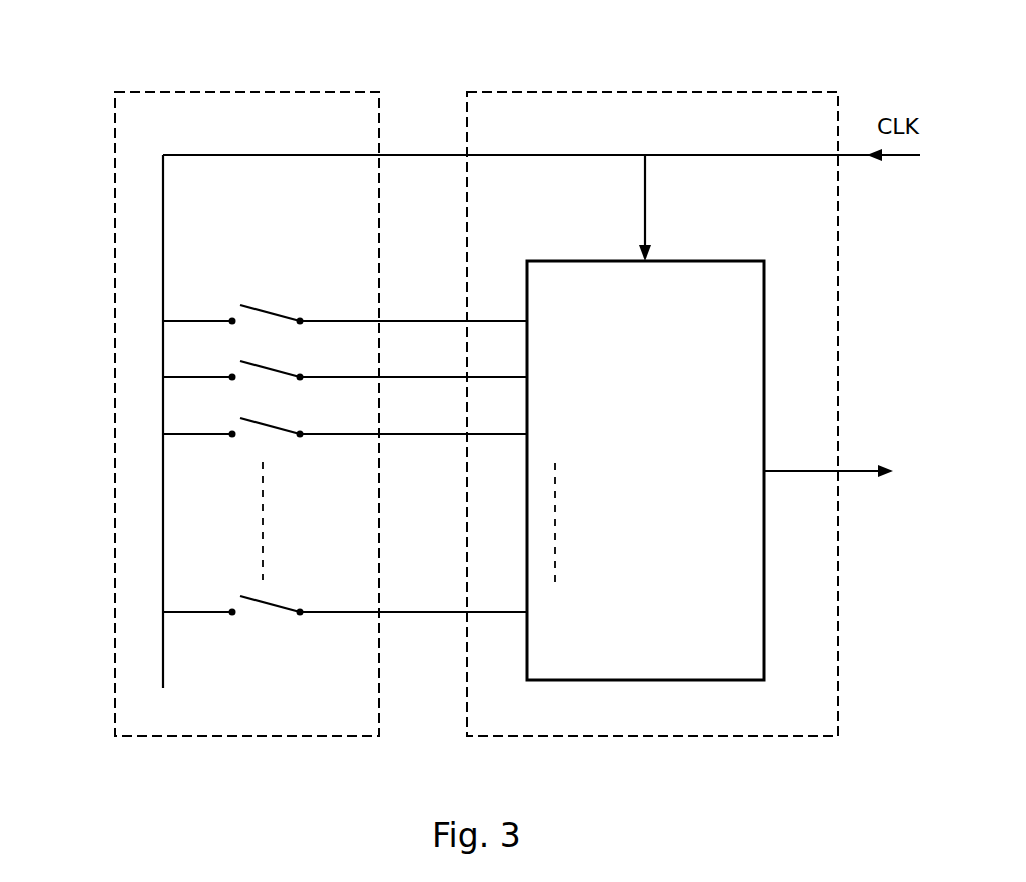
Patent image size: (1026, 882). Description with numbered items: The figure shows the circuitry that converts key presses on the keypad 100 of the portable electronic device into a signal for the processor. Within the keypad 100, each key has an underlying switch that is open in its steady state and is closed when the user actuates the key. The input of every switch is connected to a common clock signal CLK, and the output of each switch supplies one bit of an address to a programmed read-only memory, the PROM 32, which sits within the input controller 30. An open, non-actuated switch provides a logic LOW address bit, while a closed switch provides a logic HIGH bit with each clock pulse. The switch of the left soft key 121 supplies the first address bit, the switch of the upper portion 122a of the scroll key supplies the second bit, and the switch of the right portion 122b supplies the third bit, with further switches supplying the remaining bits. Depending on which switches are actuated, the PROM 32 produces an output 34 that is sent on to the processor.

The keypad 100 is at (223, 92).
The input controller 30 is at (728, 92).
The programmed read-only memory (PROM) 32 is at (718, 261).
The output 34 is at (822, 471).
The left soft key 121 is at (198, 305).
The upper portion of the scroll key 122a is at (198, 361).
The right portion of the scroll key 122b is at (198, 418).